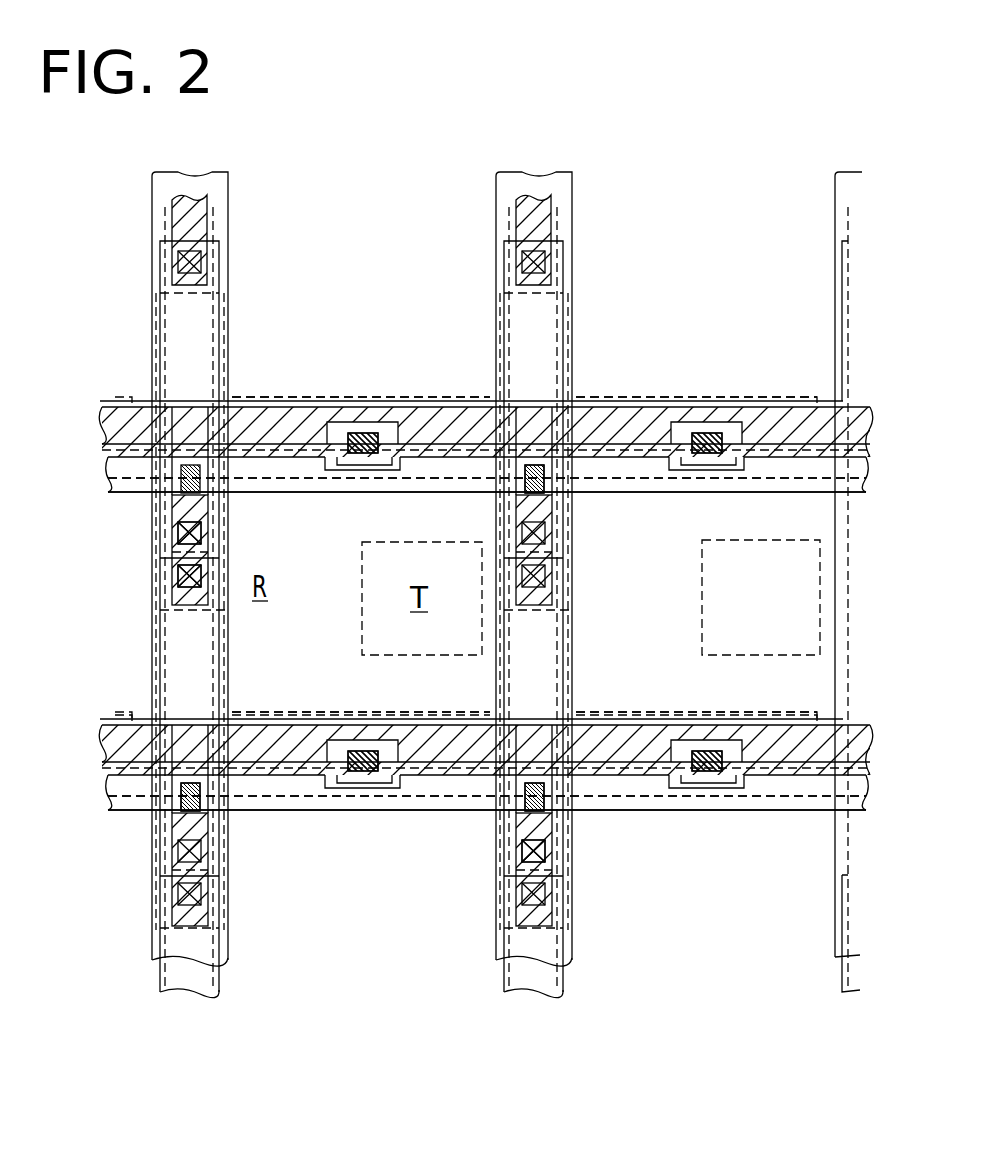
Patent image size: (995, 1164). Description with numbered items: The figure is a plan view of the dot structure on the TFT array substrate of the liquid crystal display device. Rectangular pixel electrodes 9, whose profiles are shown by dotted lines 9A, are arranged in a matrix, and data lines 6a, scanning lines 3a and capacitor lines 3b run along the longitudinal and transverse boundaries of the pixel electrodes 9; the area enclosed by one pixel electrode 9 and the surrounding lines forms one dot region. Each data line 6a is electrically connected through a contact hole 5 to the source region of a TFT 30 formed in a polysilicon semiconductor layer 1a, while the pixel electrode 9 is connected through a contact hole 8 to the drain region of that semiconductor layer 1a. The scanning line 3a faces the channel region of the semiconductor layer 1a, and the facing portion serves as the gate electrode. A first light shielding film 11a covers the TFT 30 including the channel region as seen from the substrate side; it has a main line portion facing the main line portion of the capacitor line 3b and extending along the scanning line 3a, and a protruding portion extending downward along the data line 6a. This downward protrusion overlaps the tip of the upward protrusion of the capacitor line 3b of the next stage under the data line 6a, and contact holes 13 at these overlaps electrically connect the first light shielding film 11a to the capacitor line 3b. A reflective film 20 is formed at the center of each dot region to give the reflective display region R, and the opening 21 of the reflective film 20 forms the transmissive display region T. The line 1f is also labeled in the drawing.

The semiconductor layer 1a is at (548, 800).
The data line edge 1f is at (150, 658).
The scanning line 3a is at (380, 808).
The capacitor line 3b is at (340, 716).
The contact hole 5 is at (548, 854).
The data line 6a is at (572, 525).
The contact hole 8 is at (700, 776).
The pixel electrode 9 is at (480, 534).
The dotted line 9A is at (790, 480).
The first light shielding film 11a is at (190, 722).
The contact hole 13 is at (182, 578).
The reflective film 20 is at (258, 520).
The opening 21 is at (422, 540).
The TFT 30 is at (243, 868).